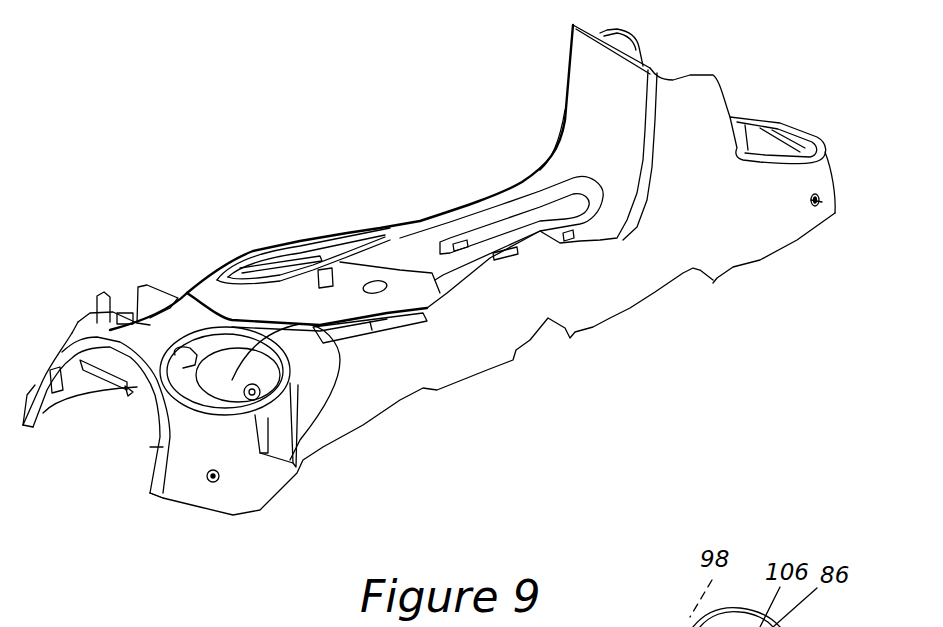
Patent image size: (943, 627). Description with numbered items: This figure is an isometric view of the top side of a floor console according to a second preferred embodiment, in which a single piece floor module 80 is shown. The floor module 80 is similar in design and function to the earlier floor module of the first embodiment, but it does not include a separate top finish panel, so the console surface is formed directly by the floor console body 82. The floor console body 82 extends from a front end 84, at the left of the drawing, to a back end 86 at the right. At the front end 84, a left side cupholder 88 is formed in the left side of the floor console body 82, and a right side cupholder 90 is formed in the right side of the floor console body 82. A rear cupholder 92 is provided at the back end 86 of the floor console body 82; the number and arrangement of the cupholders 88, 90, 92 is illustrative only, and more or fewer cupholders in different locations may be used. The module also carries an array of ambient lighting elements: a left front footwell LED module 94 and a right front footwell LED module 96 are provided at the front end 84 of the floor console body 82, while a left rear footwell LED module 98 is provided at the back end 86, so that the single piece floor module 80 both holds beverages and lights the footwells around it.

The single piece floor module 80 is at (273, 232).
The floor console body 82 is at (729, 262).
The front end 84 is at (187, 498).
The back end 86 is at (830, 190).
The left side cupholder 88 is at (243, 373).
The right side cupholder 90 is at (152, 307).
The rear cupholder 92 is at (778, 145).
The left front footwell LED module 94 is at (212, 482).
The right front footwell LED module 96 is at (30, 378).
The left rear footwell LED module 98 is at (822, 202).